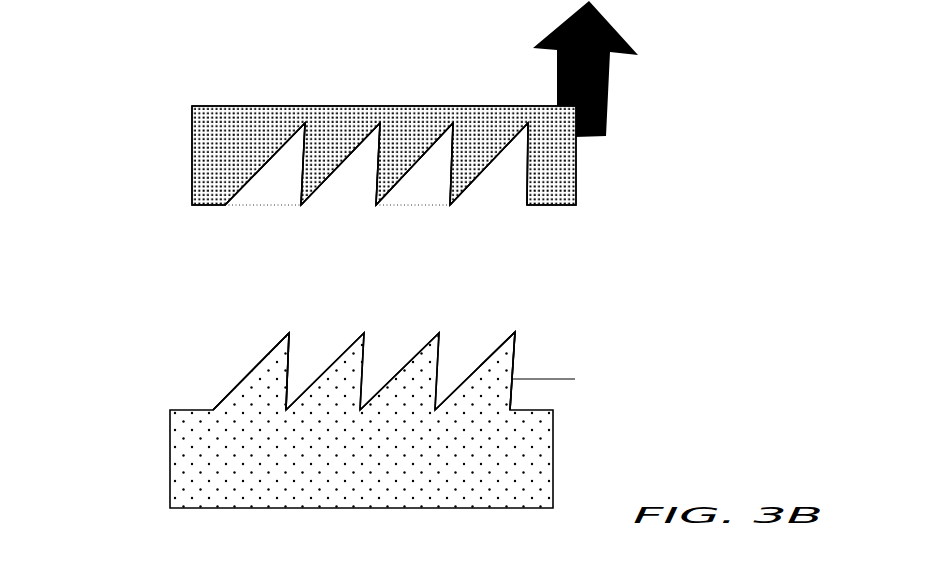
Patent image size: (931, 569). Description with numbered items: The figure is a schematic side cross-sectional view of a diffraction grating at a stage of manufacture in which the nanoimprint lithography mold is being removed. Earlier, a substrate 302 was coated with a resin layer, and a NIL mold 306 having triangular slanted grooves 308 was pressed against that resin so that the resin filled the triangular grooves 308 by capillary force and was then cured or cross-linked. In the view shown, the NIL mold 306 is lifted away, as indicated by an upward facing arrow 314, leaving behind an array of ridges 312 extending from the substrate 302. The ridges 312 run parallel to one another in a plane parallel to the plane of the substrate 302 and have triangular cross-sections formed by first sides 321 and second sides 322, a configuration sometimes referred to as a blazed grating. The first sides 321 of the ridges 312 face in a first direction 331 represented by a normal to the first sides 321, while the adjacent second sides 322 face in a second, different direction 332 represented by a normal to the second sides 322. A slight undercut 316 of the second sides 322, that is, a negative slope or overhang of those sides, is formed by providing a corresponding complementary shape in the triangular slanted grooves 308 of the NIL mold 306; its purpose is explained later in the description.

The substrate 302 is at (171, 462).
The NIL mold 306 is at (192, 144).
The triangular slanted grooves 308 is at (287, 155).
The ridges 312 is at (265, 345).
The upward facing arrow 314 is at (610, 93).
The undercut 316 is at (300, 372).
The first sides 321 is at (497, 333).
The second sides 322 is at (524, 360).
The first direction 331 is at (247, 380).
The second direction 332 is at (553, 380).